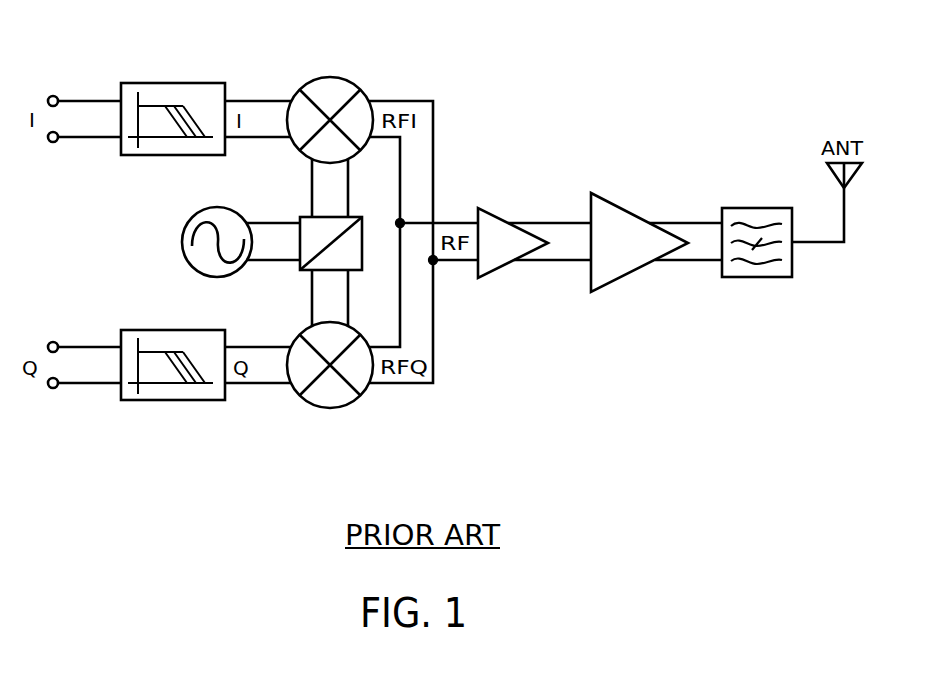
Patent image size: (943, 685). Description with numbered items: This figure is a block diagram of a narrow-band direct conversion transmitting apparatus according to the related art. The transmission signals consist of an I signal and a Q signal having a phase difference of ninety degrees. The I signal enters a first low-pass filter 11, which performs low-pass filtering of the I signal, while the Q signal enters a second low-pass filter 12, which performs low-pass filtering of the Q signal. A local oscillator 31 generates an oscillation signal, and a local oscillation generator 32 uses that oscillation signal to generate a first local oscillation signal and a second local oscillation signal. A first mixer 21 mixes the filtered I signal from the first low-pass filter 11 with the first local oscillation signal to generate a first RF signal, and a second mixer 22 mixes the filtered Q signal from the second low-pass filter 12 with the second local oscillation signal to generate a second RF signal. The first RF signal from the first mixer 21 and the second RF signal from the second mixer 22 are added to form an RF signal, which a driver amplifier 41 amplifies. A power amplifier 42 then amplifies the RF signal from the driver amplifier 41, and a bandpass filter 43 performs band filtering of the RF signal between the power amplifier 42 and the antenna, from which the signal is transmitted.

The first low-pass filter 11 is at (172, 83).
The second low-pass filter 12 is at (168, 400).
The first mixer 21 is at (330, 77).
The second mixer 22 is at (330, 408).
The local oscillator 31 is at (181, 243).
The local oscillation generator 32 is at (298, 218).
The driver amplifier 41 is at (500, 208).
The power amplifier 42 is at (634, 210).
The bandpass filter 43 is at (757, 208).